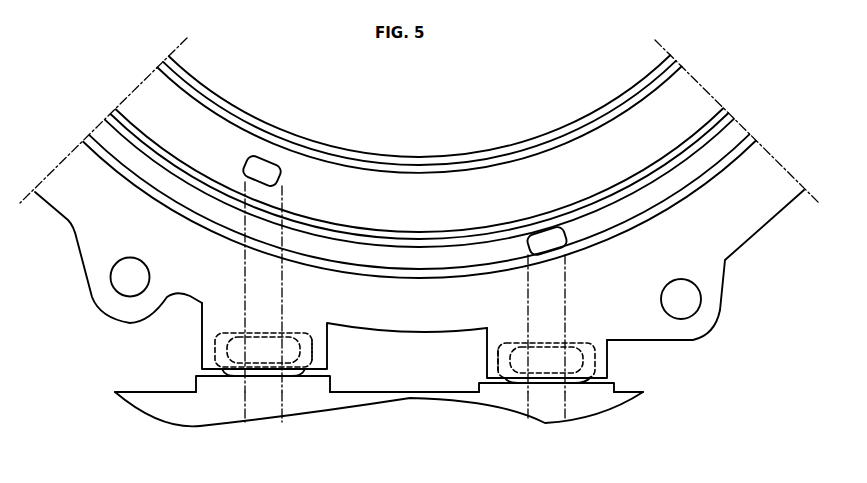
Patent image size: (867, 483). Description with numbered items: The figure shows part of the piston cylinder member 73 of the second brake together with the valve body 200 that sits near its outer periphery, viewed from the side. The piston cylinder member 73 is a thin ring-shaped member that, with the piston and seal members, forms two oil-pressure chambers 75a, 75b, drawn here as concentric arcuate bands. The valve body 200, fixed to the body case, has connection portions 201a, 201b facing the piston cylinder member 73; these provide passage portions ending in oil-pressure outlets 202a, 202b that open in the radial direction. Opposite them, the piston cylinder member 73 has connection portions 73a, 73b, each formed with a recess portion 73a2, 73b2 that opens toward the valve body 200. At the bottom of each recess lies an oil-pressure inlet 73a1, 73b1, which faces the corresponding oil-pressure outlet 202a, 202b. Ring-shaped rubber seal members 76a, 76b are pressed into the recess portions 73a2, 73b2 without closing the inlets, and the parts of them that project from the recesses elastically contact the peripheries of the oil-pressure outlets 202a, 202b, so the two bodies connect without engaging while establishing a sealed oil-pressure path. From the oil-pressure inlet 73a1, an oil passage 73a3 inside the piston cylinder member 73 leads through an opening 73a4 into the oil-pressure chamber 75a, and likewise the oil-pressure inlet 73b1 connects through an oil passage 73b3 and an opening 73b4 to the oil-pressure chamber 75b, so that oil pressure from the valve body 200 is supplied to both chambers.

The piston cylinder member 73 is at (472, 152).
The connection portion 73a is at (487, 347).
The connection portion 73b is at (200, 338).
The oil-pressure inlet 73a1 is at (548, 337).
The recess portion 73a2 is at (499, 341).
The oil passage 73a3 is at (527, 302).
The opening 73a4 is at (532, 240).
The oil-pressure inlet 73b1 is at (263, 328).
The recess portion 73b2 is at (312, 332).
The oil passage 73b3 is at (243, 277).
The opening 73b4 is at (245, 163).
The oil-pressure chamber 75a is at (729, 137).
The oil-pressure chamber 75b is at (689, 102).
The rubber seal member 76a is at (585, 360).
The rubber seal member 76b is at (217, 353).
The valve body 200 is at (628, 392).
The connection portion 201a is at (480, 387).
The connection portion 201b is at (332, 380).
The oil-pressure outlet 202a is at (545, 390).
The oil-pressure outlet 202b is at (263, 387).